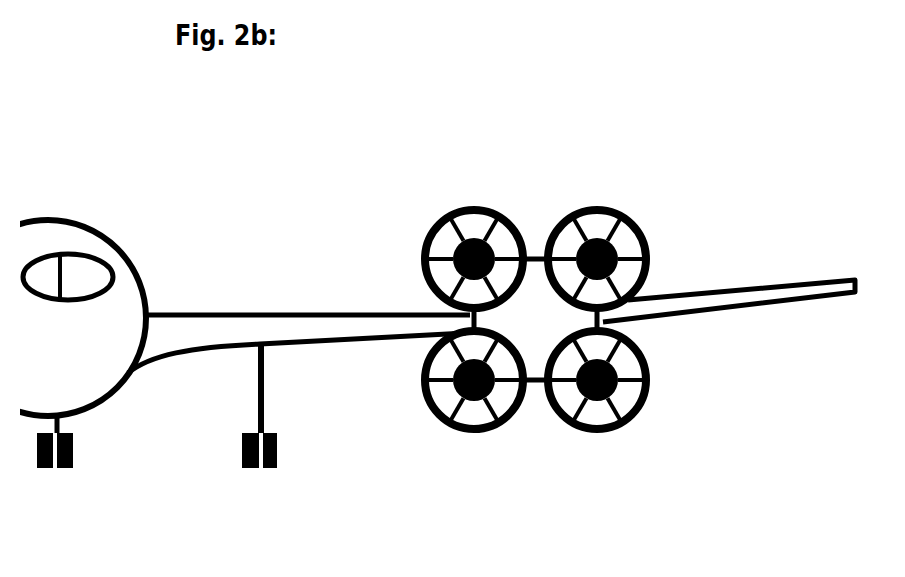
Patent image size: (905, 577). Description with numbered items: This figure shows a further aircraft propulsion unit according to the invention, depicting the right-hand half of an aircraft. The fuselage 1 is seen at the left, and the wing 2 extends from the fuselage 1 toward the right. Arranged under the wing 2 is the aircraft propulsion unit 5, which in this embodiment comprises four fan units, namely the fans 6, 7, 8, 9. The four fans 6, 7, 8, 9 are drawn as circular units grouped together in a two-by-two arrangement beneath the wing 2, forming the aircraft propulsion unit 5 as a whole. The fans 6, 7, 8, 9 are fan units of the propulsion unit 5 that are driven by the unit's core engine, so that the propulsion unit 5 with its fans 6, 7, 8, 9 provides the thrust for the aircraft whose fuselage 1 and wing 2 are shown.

The fuselage 1 is at (119, 297).
The wing 2 is at (236, 333).
The aircraft propulsion unit 5 is at (529, 340).
The fan 6 is at (433, 417).
The fan 7 is at (612, 428).
The fan 8 is at (592, 207).
The fan 9 is at (473, 207).